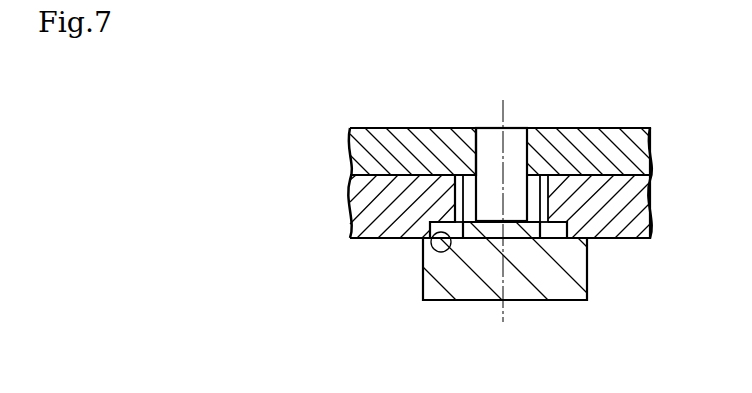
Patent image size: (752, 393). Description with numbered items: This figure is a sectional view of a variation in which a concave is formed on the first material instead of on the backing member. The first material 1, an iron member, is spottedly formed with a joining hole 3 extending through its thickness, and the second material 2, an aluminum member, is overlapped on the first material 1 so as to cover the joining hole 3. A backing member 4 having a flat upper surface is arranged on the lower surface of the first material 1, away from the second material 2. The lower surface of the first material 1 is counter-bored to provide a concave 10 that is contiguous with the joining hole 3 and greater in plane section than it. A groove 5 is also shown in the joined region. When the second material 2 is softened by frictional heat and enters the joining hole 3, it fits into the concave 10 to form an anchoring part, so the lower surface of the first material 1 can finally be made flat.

The first material 1 is at (353, 207).
The second material 2 is at (353, 139).
The joining hole 3 is at (493, 193).
The backing member 4 is at (443, 272).
The groove 5 is at (562, 230).
The concave 10 is at (436, 244).